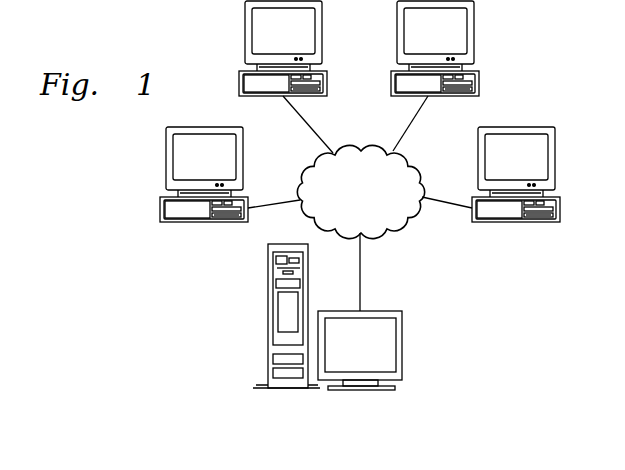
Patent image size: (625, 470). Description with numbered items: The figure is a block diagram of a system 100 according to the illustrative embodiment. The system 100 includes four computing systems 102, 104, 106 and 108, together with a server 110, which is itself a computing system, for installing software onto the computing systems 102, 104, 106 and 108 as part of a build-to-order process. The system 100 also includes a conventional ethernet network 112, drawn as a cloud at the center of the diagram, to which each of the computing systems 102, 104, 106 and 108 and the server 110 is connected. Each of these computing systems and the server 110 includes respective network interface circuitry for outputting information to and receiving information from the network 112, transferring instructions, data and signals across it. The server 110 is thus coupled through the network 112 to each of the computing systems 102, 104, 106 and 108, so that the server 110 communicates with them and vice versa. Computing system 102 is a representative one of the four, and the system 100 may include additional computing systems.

The system 100 is at (160, 283).
The computing system 102 is at (474, 30).
The computing system 104 is at (514, 127).
The computing system 106 is at (322, 30).
The computing system 108 is at (166, 162).
The server 110 is at (268, 318).
The ethernet network 112 is at (360, 148).